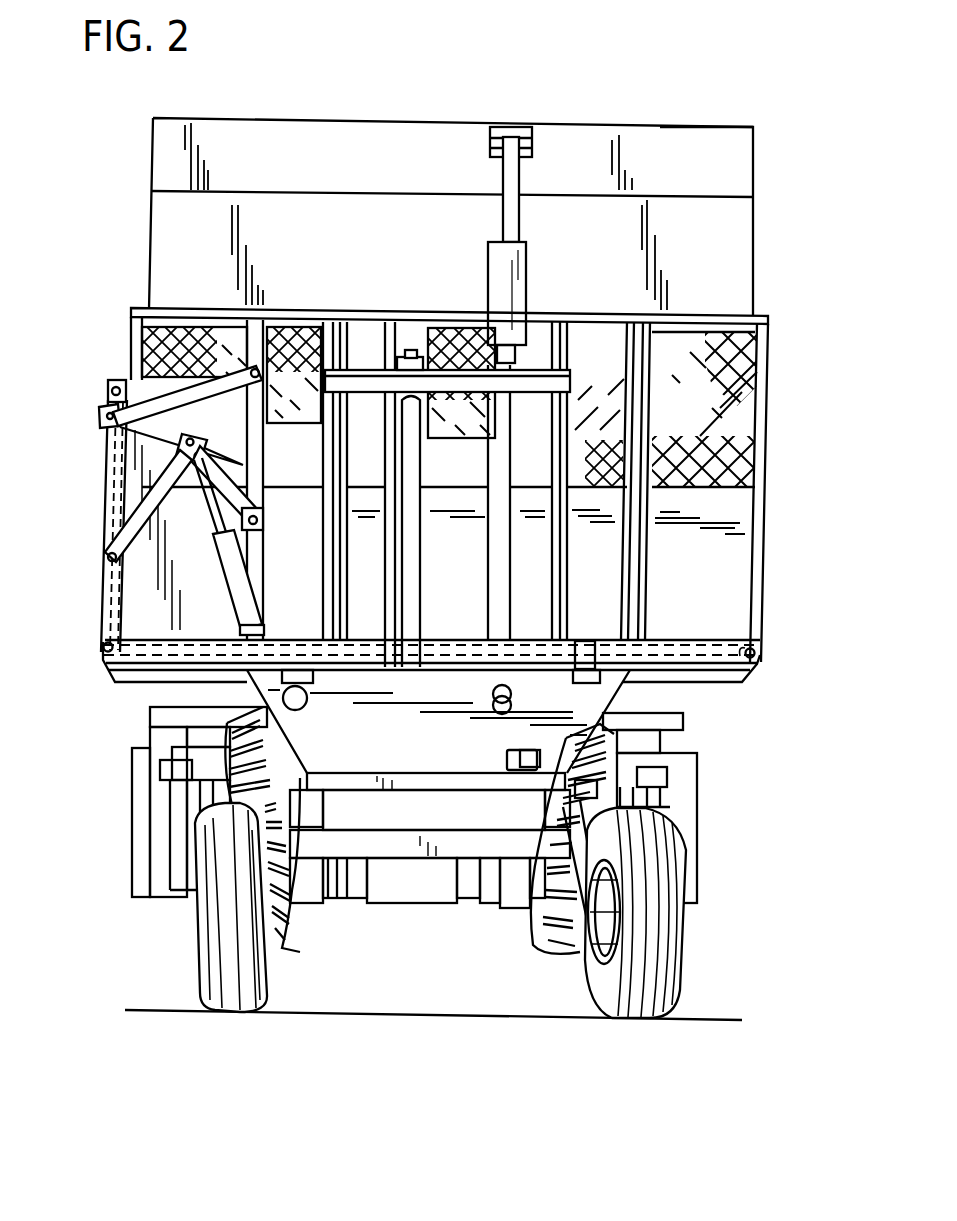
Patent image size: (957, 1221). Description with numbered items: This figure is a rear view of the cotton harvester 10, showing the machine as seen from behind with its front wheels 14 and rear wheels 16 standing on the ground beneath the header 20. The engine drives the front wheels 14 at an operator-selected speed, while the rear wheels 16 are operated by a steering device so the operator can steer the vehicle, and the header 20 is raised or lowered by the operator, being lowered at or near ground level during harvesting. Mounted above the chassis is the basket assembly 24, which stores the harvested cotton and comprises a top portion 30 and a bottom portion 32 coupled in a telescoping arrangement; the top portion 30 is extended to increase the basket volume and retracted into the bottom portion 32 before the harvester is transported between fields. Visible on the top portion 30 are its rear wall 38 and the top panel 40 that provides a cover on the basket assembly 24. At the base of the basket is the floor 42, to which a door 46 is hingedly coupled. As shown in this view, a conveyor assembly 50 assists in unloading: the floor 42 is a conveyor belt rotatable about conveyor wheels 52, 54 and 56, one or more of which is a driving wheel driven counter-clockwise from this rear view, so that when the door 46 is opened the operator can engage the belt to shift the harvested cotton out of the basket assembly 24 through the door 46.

The cotton harvester 10 is at (106, 171).
The front wheels 14 is at (288, 942).
The rear wheels 16 is at (208, 962).
The header 20 is at (98, 887).
The basket assembly 24 is at (448, 509).
The top portion 30 is at (772, 226).
The bottom portion 32 is at (782, 574).
The rear wall 38 is at (397, 271).
The top panel 40 is at (692, 122).
The floor 42 is at (683, 645).
The door 46 is at (104, 488).
The conveyor assembly 50 is at (69, 526).
The conveyor wheel 52 is at (756, 657).
The conveyor wheel 54 is at (106, 652).
The conveyor wheel 56 is at (108, 390).